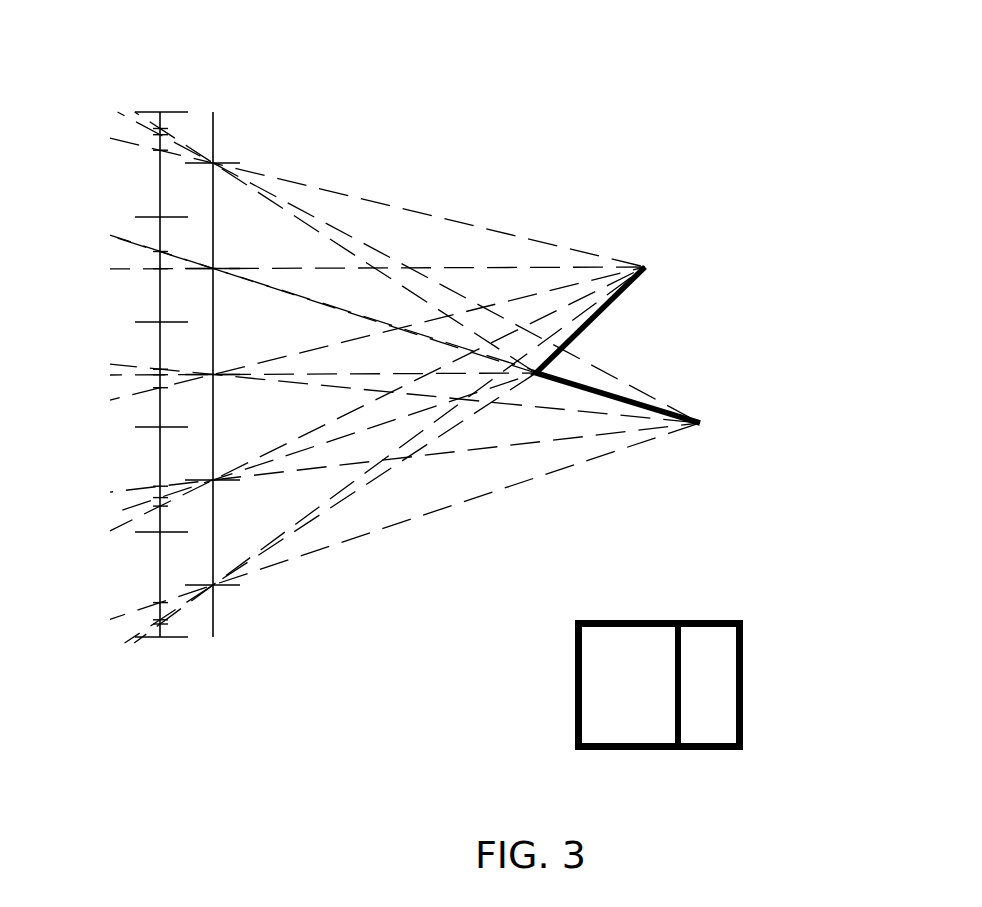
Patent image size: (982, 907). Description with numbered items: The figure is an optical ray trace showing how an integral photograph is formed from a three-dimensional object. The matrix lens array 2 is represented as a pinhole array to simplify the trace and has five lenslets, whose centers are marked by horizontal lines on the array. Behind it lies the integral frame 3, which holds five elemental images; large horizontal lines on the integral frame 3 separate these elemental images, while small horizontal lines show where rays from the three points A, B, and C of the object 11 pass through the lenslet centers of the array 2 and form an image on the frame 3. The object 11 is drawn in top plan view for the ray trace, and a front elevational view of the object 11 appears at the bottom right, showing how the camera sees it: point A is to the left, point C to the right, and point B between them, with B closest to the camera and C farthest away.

The integral frame 3 is at (166, 72).
The matrix lens array 2 is at (292, 131).
The object 11 is at (723, 372).